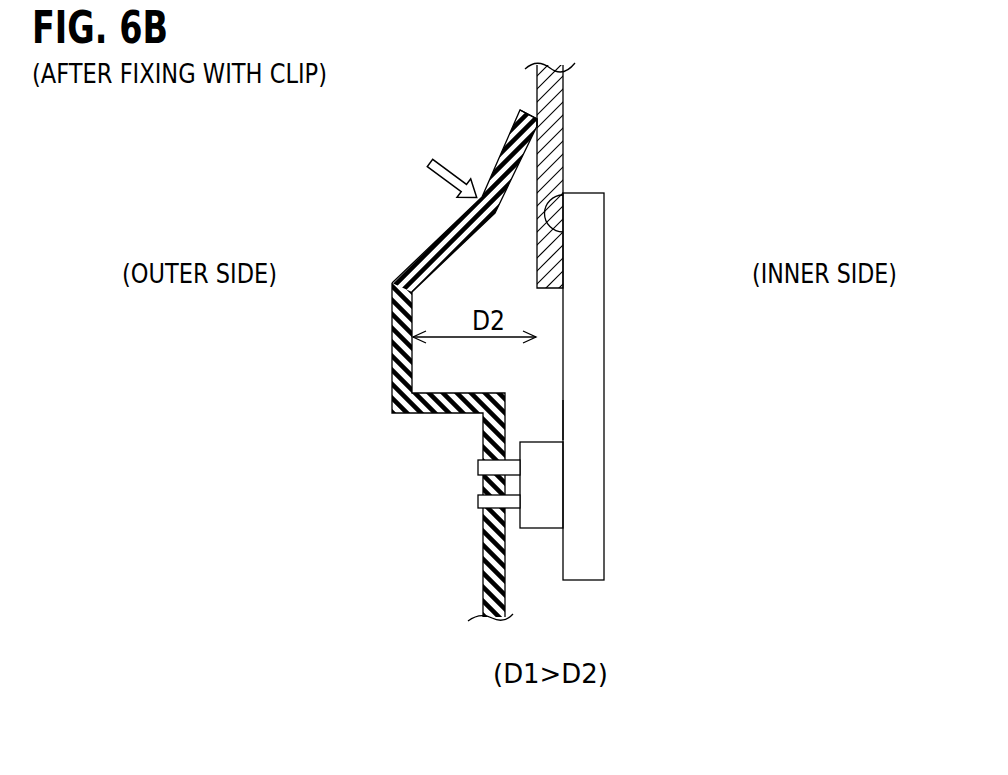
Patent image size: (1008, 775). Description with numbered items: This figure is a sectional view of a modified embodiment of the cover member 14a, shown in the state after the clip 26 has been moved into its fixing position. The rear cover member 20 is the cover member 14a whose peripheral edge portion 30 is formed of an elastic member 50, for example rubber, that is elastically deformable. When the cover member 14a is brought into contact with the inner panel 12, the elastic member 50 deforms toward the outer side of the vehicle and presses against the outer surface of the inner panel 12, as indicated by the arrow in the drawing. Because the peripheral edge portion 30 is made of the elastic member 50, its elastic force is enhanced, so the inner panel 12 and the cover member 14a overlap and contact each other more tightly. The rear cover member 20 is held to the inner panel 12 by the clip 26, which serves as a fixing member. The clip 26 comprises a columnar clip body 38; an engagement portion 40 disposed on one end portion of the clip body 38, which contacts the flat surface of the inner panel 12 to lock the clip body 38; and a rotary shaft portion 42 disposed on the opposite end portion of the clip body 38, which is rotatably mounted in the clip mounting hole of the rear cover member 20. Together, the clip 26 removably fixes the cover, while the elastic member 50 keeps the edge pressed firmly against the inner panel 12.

The inner panel 12 is at (570, 157).
The cover member 14a is at (388, 345).
The rear cover member 20 is at (444, 450).
The clip 26 is at (611, 379).
The peripheral edge portion 30 is at (540, 117).
The clip body 38 is at (592, 423).
The engagement portion 40 is at (562, 232).
The rotary shaft portion 42 is at (535, 536).
The elastic member 50 is at (507, 132).